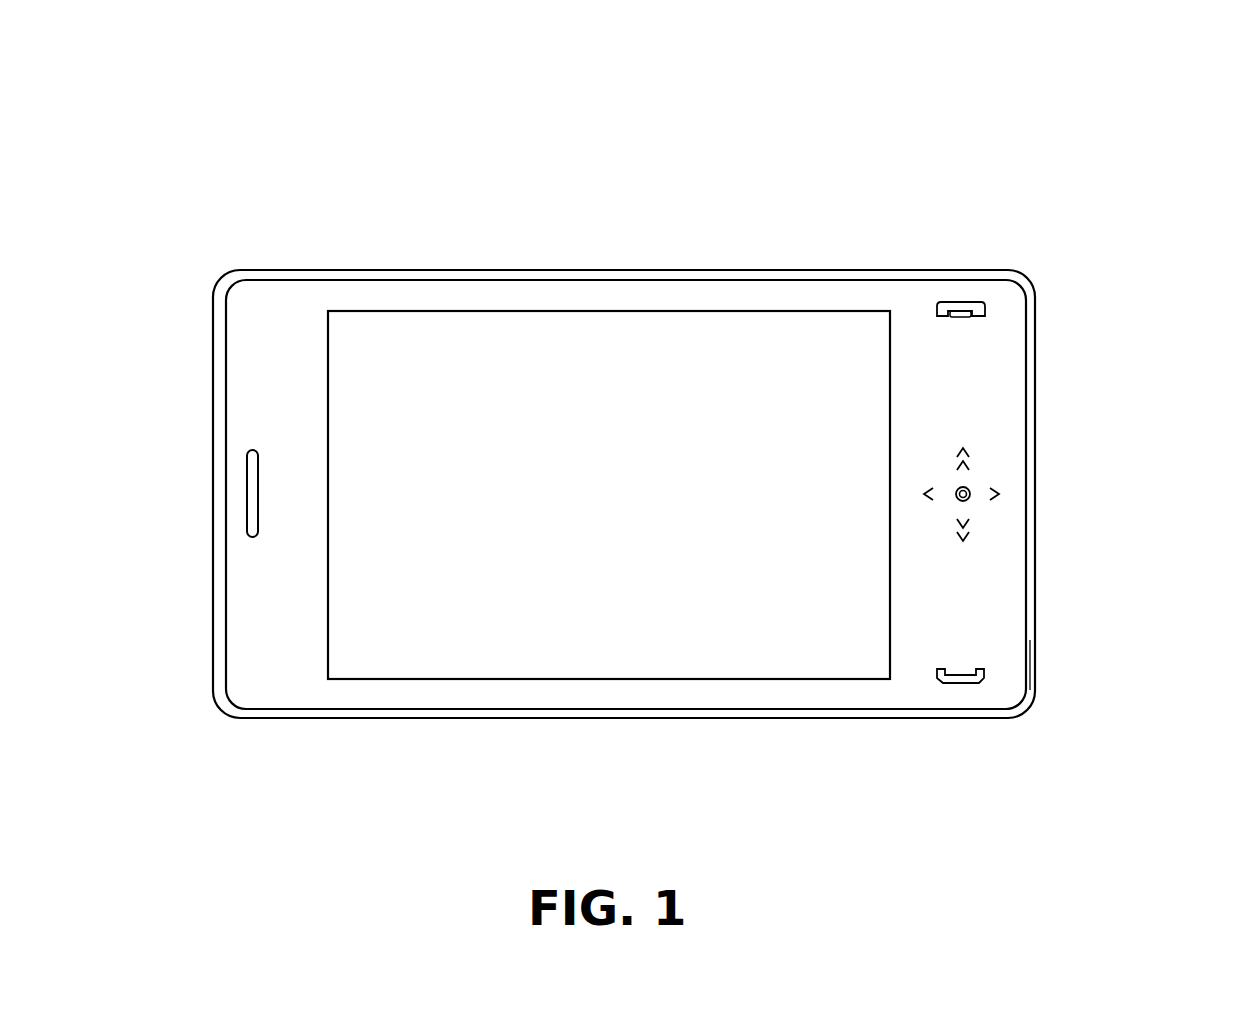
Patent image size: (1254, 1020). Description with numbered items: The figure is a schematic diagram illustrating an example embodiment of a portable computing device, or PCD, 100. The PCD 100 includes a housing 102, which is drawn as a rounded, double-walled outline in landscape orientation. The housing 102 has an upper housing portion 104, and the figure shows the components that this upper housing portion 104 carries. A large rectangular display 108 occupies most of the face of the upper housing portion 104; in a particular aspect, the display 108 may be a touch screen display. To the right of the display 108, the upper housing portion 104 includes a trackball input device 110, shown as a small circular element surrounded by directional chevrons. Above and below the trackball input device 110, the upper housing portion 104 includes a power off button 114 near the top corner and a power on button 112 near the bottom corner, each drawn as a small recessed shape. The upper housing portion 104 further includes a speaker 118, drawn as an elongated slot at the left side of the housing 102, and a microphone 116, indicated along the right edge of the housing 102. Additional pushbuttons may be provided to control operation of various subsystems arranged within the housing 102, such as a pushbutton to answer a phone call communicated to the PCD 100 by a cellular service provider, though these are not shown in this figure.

The portable computing device 100 is at (233, 88).
The housing 102 is at (380, 269).
The upper housing portion 104 is at (613, 297).
The display 108 is at (608, 651).
The trackball input device 110 is at (968, 498).
The power on button 112 is at (978, 681).
The power off button 114 is at (983, 316).
The microphone 116 is at (1062, 643).
The speaker 118 is at (247, 478).